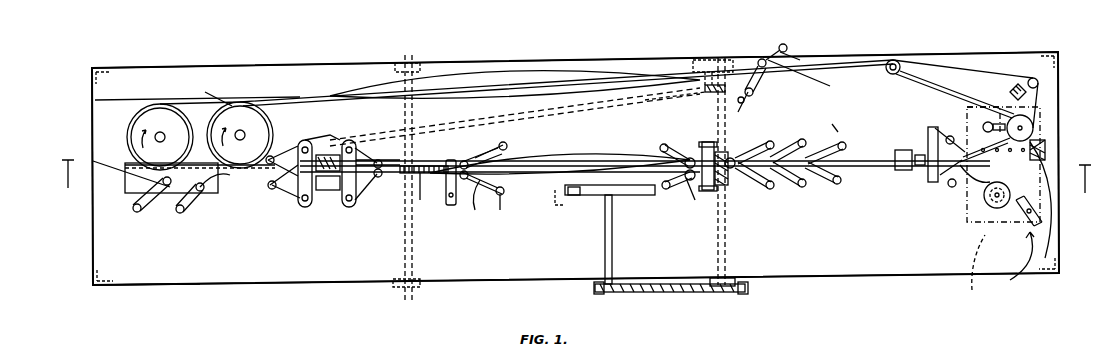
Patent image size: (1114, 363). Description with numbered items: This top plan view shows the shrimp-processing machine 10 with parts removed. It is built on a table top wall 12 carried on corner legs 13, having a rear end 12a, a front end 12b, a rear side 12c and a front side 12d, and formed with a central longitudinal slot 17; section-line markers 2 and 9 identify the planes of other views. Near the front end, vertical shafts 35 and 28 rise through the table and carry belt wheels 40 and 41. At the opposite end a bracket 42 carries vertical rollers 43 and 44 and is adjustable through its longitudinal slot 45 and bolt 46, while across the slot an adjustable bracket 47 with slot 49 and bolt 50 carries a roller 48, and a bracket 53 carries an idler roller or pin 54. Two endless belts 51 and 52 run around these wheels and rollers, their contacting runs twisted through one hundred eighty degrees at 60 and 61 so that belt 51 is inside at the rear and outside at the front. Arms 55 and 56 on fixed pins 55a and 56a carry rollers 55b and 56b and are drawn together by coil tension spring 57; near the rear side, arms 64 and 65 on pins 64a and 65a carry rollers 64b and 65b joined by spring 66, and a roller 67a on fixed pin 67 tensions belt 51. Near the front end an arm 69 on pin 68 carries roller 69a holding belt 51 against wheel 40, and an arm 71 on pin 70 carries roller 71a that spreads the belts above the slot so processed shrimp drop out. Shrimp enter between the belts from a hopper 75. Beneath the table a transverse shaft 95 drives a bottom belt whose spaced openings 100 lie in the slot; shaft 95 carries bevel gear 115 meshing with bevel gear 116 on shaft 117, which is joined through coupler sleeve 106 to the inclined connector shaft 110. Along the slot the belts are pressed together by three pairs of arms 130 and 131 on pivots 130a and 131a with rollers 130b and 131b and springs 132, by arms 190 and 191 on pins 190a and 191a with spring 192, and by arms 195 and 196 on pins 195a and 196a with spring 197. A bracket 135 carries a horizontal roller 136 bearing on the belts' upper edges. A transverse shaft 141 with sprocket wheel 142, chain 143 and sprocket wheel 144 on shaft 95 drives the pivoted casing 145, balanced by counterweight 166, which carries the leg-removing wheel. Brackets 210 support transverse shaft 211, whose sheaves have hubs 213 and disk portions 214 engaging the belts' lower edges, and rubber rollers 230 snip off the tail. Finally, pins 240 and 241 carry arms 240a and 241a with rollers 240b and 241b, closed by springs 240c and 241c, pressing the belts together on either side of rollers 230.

The machine 10 is at (158, 319).
The table top wall 12 is at (942, 268).
The rear end 12a is at (1040, 145).
The front end 12b is at (92, 238).
The rear side 12c is at (648, 58).
The front side 12d is at (861, 285).
The corner legs 13 is at (90, 278).
The central longitudinal slot 17 is at (425, 180).
The section line 2 is at (572, 189).
The section line 9 is at (403, 50).
The vertical shaft 28 is at (242, 130).
The vertical shaft 35 is at (163, 132).
The belt wheel 40 is at (148, 118).
The belt wheel 41 is at (262, 110).
The bracket 42 is at (1013, 264).
The vertical roller 43 is at (992, 208).
The vertical roller 44 is at (1042, 222).
The longitudinal slot 45 is at (1048, 245).
The bolt 46 is at (1025, 215).
The bracket 47 is at (968, 108).
The roller 48 is at (1034, 128).
The longitudinal slot 49 is at (998, 124).
The bolt 50 is at (988, 122).
The belt 51 is at (916, 86).
The belt 52 is at (206, 124).
The adjustable bracket 53 is at (1018, 84).
The idler roller or pin 54 is at (1040, 84).
The arm 55 is at (950, 188).
The fixed vertical pin 55a is at (945, 178).
The roller 55b is at (970, 190).
The arm 56 is at (951, 136).
The fixed vertical pin 56a is at (935, 126).
The roller 56b is at (968, 152).
The coil tension spring 57 is at (928, 175).
The twist 60 is at (478, 72).
The twist 61 is at (605, 150).
The arm 64 is at (758, 60).
The fixed vertical pin 64a is at (742, 104).
The roller 64b is at (784, 44).
The arm 65 is at (758, 90).
The fixed vertical pin 65a is at (748, 102).
The roller 65b is at (812, 80).
The coil tension spring 66 is at (795, 52).
The fixed vertical pin 67 is at (888, 70).
The roller 67a is at (890, 60).
The fixed pin 68 is at (130, 215).
The arm 69 is at (150, 212).
The roller 69a is at (95, 160).
The pin 70 is at (178, 218).
The arm 71 is at (206, 200).
The roller 71a is at (215, 190).
The hopper 75 is at (971, 270).
The transverse horizontal shaft 95 is at (725, 240).
The spaced central openings 100 is at (1046, 150).
The coupler sleeve 106 is at (700, 60).
The connector shaft 110 is at (570, 110).
The bevel gear 115 is at (706, 93).
The bevel gear 116 is at (672, 100).
The shaft 117 is at (712, 58).
The arm 130 is at (755, 195).
The fixed pivot 130a is at (842, 190).
The roller 130b is at (805, 192).
The arm 131 is at (745, 150).
The fixed pivot 131a is at (848, 145).
The roller 131b is at (795, 145).
The spring 132 is at (732, 158).
The bracket 135 is at (708, 142).
The horizontal pin or roller 136 is at (720, 190).
The horizontal transverse shaft 141 is at (604, 242).
The sprocket wheel 142 is at (594, 290).
The sprocket chain 143 is at (688, 290).
The sprocket wheel 144 is at (746, 290).
The casing 145 is at (600, 197).
The counterweight 166 is at (570, 197).
The arm 190 is at (670, 195).
The pin 190a is at (680, 182).
The arm 191 is at (662, 145).
The pin 191a is at (660, 147).
The coil tension spring 192 is at (692, 200).
The arm 195 is at (476, 212).
The fixed vertical pin 195a is at (502, 212).
The arm 196 is at (486, 155).
The fixed vertical pin 196a is at (505, 150).
The tension spring 197 is at (508, 192).
The brackets 210 is at (415, 63).
The transverse horizontal shaft 211 is at (398, 240).
The central hub 213 is at (425, 205).
The annular disk portion 214 is at (456, 165).
The rubber rollers 230 is at (328, 192).
The pin 240 is at (350, 140).
The arm 240a is at (372, 150).
The roller 240b is at (395, 162).
The coil tension spring 240c is at (380, 180).
The pin 241 is at (312, 132).
The arm 241a is at (290, 210).
The roller 241b is at (292, 200).
The coil tension spring 241c is at (335, 135).